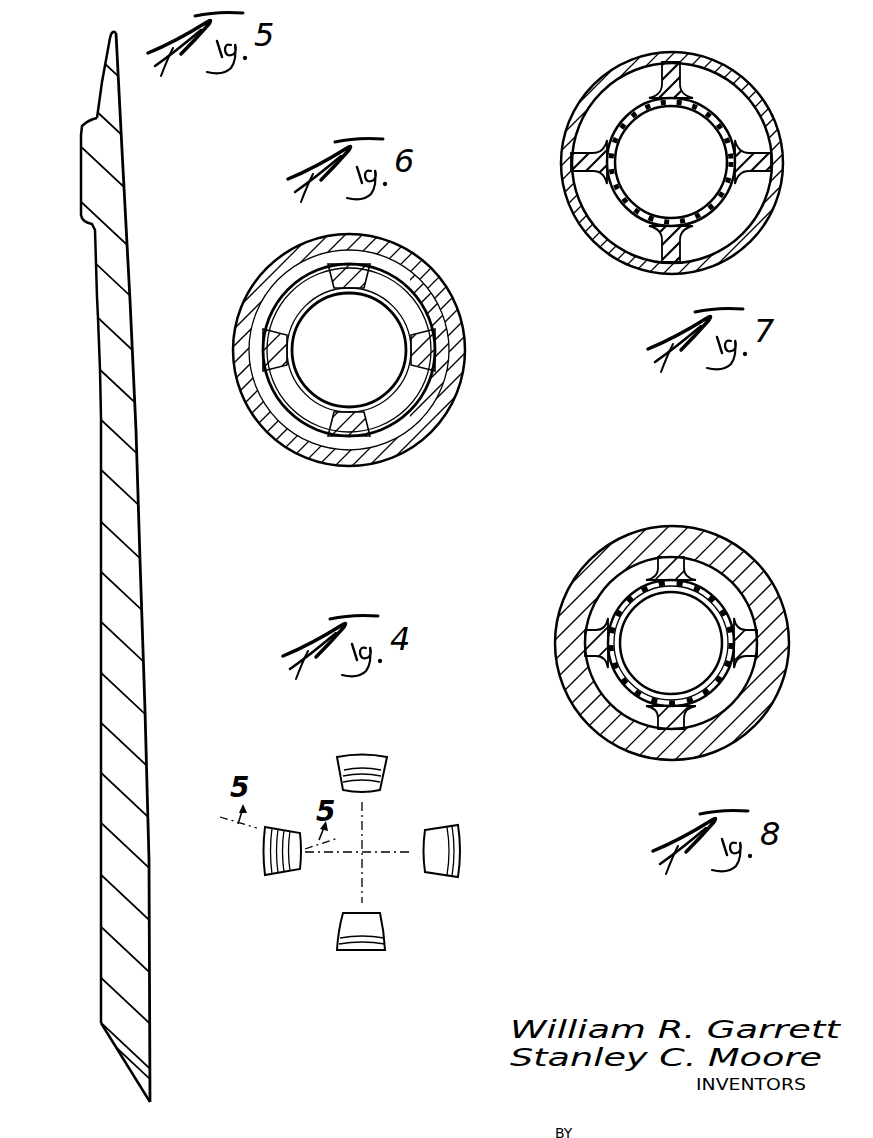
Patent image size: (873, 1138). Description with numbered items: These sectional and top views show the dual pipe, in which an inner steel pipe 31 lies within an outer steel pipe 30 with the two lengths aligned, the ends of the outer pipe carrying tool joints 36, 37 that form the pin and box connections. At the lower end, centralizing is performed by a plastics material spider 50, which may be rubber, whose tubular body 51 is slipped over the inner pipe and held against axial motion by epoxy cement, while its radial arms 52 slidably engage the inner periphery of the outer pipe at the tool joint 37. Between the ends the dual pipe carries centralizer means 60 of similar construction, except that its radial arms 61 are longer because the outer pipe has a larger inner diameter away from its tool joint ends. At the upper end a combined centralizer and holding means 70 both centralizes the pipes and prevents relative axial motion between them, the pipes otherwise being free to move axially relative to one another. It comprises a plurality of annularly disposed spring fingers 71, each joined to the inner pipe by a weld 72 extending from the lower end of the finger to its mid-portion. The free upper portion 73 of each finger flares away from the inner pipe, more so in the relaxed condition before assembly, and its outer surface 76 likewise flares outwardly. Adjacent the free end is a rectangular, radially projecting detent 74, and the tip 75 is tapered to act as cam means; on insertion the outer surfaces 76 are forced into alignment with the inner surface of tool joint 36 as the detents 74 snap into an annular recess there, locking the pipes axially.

In FIG. 6, the outer steel pipe 30 is at (455, 362).
In FIG. 7, the outer steel pipe 30 is at (770, 207).
In FIG. 6, the inner steel pipe 31 is at (325, 300).
In FIG. 7, the inner steel pipe 31 is at (630, 204).
In FIG. 8, the inner steel pipe 31 is at (616, 658).
In FIG. 6, the tool joint 36 is at (435, 389).
In FIG. 8, the tool joint 37 is at (745, 574).
In FIG. 8, the spider 50 is at (572, 618).
In FIG. 8, the tubular body 51 is at (628, 684).
In FIG. 8, the radial arms 52 is at (673, 567).
In FIG. 7, the centralizer means 60 is at (602, 176).
In FIG. 7, the radial arms 61 is at (774, 156).
In FIG. 6, the combined centralizer and holding means 70 is at (353, 417).
In FIG. 5, the spring fingers 71 is at (122, 577).
In FIG. 4, the spring fingers 71 is at (368, 853).
In FIG. 6, the weld 72 is at (368, 288).
In FIG. 5, the free upper portion 73 is at (131, 313).
In FIG. 4, the free upper portion 73 is at (293, 828).
In FIG. 5, the detent 74 is at (83, 165).
In FIG. 5, the tip 75 is at (97, 84).
In FIG. 5, the outer surface 76 is at (98, 353).